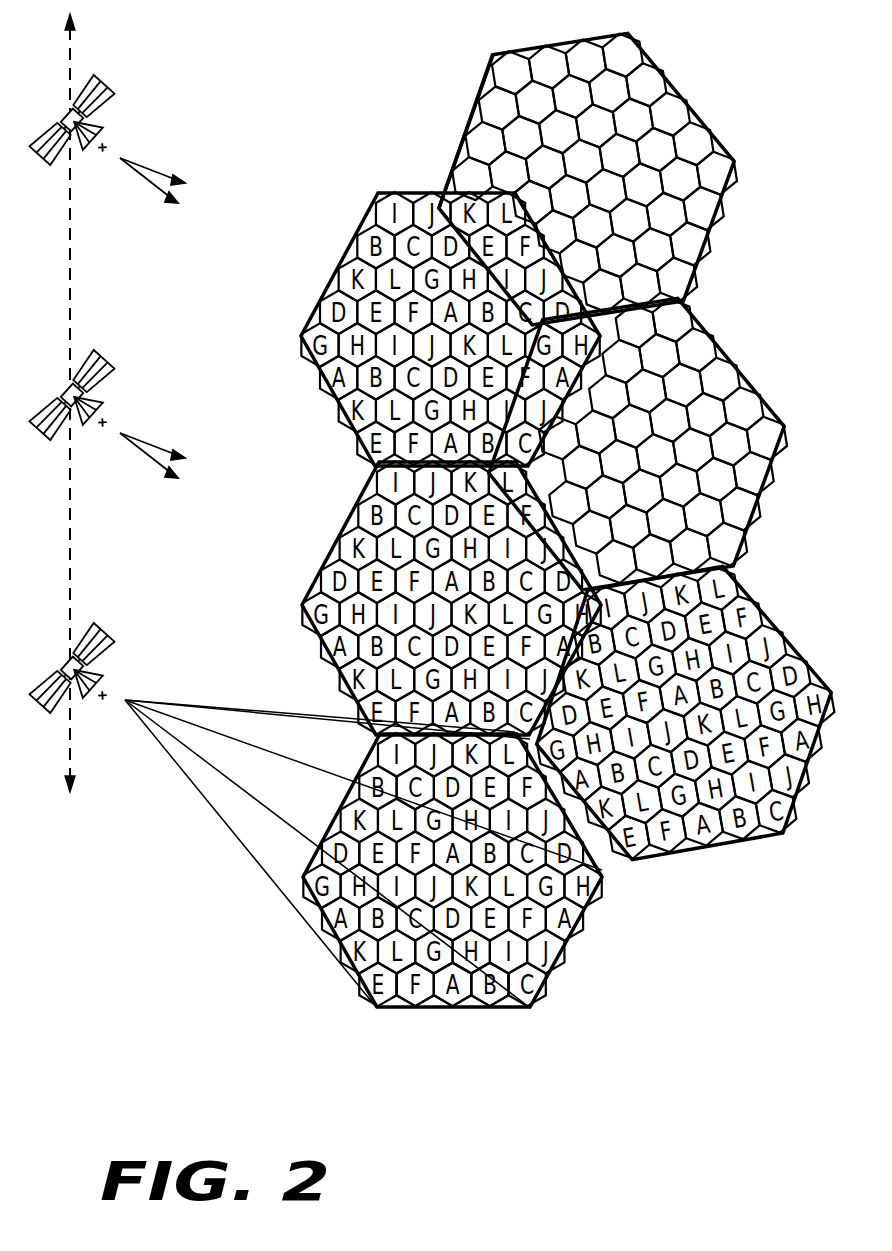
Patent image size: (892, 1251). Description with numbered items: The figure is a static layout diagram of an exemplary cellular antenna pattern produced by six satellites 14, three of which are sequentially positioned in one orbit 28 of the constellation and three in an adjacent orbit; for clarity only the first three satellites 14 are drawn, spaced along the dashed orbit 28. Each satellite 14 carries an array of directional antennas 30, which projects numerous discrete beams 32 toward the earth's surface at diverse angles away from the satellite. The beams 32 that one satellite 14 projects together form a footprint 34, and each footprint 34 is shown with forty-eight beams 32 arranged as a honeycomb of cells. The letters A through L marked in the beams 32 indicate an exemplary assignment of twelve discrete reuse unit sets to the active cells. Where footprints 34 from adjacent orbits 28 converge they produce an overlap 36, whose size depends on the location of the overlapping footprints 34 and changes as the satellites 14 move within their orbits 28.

The satellite 14 is at (93, 80).
The orbit 28 is at (70, 258).
The array of directional antennas 30 is at (105, 123).
The beam 32 is at (370, 232).
The footprint 34 is at (567, 534).
The overlap 36 is at (462, 182).